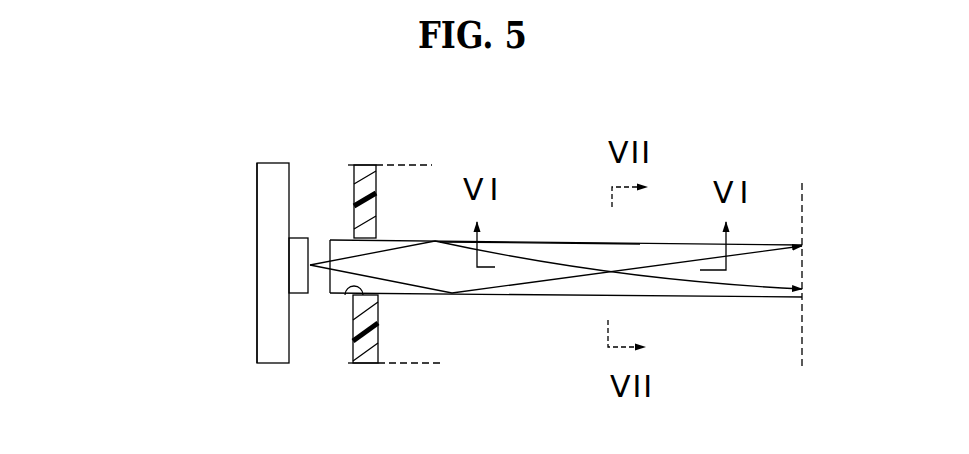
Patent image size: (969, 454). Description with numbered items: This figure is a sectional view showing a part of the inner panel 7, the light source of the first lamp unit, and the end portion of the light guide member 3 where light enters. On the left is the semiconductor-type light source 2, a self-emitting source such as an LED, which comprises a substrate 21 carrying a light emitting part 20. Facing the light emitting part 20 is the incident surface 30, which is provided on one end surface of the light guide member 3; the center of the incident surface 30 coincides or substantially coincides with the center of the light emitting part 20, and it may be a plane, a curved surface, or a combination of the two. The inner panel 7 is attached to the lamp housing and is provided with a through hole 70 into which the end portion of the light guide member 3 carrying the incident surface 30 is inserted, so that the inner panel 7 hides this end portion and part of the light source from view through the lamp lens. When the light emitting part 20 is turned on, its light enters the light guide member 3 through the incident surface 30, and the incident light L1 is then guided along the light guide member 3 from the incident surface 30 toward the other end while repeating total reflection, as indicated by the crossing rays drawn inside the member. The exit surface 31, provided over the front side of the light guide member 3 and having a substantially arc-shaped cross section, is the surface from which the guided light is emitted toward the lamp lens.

The semiconductor-type light source 2 is at (251, 191).
The substrate 21 is at (257, 223).
The light emitting part 20 is at (298, 273).
The inner panel 7 is at (352, 192).
The through hole 70 is at (348, 288).
The incident surface 30 is at (329, 281).
The light guide member 3 is at (548, 238).
The exit surface 31 is at (648, 253).
The incident light L1 is at (538, 260).